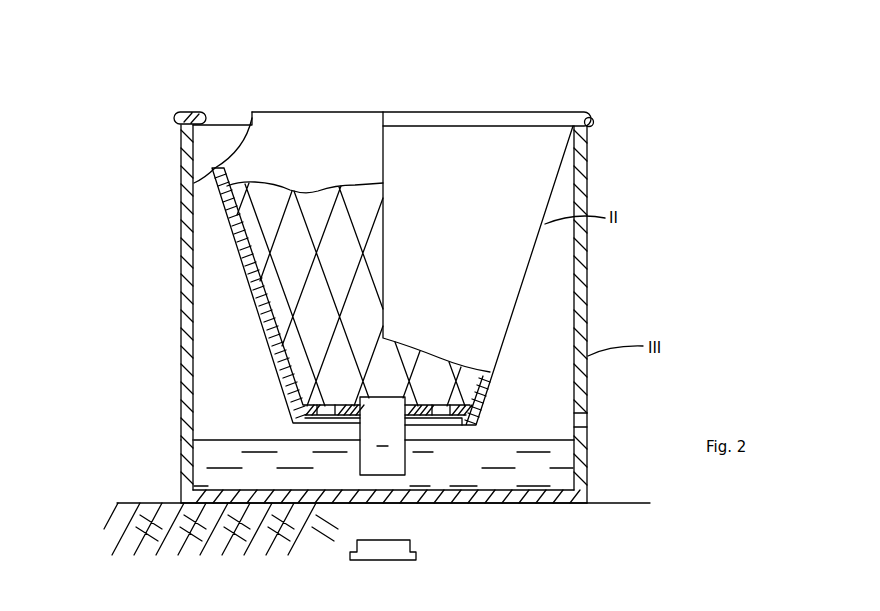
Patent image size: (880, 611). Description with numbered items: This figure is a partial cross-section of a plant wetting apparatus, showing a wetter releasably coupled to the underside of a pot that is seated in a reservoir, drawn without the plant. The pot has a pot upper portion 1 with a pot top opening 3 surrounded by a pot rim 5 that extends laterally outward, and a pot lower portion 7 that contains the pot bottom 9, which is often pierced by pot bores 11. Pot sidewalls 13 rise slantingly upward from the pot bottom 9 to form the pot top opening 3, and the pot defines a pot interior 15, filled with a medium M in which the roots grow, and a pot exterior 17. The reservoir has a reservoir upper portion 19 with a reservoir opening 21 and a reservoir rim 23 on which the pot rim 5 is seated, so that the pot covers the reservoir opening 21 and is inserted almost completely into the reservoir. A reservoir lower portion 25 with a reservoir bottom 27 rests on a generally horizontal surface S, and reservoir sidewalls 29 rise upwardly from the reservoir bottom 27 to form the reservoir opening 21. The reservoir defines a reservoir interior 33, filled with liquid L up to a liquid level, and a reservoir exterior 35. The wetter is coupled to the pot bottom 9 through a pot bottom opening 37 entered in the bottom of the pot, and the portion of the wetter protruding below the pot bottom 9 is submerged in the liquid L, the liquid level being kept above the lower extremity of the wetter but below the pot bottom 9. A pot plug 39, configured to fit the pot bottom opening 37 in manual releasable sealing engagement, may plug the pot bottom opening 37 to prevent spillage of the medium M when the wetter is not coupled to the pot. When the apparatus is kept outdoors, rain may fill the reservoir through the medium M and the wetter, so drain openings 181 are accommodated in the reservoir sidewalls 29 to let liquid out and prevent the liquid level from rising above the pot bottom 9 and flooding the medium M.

The pot upper portion 1 is at (565, 167).
The pot top opening 3 is at (443, 110).
The pot rim 5 is at (591, 116).
The pot lower portion 7 is at (540, 381).
The pot bottom 9 is at (440, 413).
The pot bores 11 is at (447, 423).
The pot sidewalls 13 is at (515, 318).
The pot interior 15 is at (284, 143).
The pot exterior 17 is at (566, 259).
The reservoir upper portion 19 is at (173, 181).
The reservoir opening 21 is at (222, 125).
The reservoir rim 23 is at (178, 122).
The reservoir lower portion 25 is at (173, 478).
The reservoir bottom 27 is at (513, 498).
The reservoir sidewalls 29 is at (182, 342).
The reservoir interior 33 is at (218, 262).
The reservoir exterior 35 is at (97, 311).
The pot bottom opening 37 is at (360, 428).
The pot plug 39 is at (416, 548).
The drain openings 181 is at (589, 421).
The medium M is at (333, 322).
The liquid L is at (215, 457).
The surface S is at (135, 502).